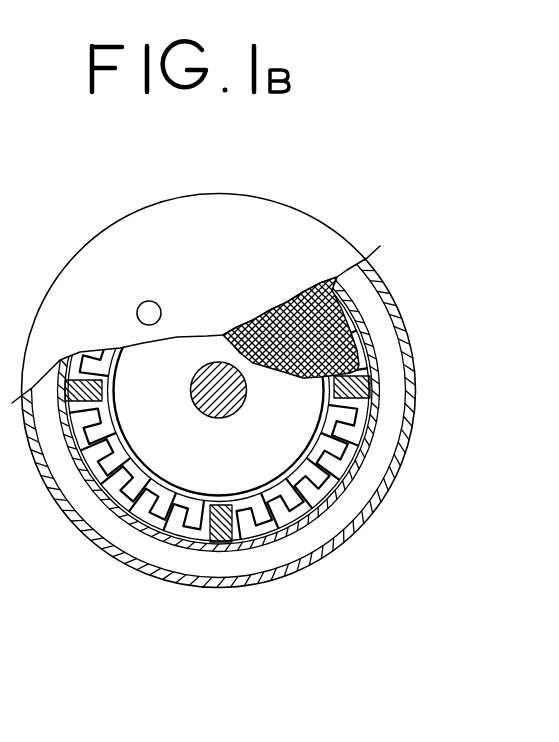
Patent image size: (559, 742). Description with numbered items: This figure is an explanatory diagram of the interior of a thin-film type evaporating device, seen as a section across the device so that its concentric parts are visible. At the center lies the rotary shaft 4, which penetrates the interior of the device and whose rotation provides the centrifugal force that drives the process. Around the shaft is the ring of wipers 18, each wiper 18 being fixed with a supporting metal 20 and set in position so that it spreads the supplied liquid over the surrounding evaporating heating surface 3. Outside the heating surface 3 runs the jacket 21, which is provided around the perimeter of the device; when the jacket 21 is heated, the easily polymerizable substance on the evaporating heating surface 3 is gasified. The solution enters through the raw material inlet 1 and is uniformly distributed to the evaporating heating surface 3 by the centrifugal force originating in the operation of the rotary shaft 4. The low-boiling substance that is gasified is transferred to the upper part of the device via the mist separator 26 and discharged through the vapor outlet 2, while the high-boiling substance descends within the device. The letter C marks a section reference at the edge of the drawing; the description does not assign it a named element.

The raw material inlet 1 is at (145, 259).
The evaporating heating surface 3 is at (353, 458).
The rotary shaft 4 is at (196, 410).
The wiper 18 is at (223, 542).
The supporting metal 20 is at (226, 505).
The jacket 21 is at (308, 545).
The mist separator 26 is at (172, 507).
The vapor outlet 2 is at (16, 568).
The section line C is at (4, 264).